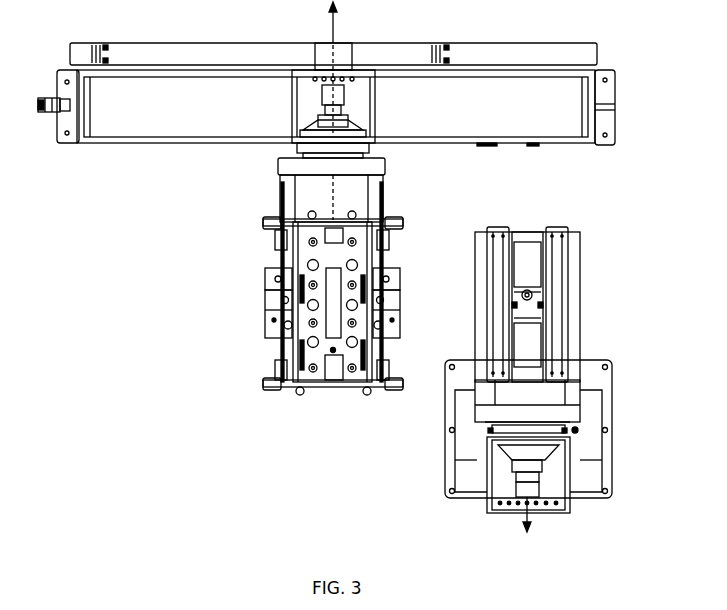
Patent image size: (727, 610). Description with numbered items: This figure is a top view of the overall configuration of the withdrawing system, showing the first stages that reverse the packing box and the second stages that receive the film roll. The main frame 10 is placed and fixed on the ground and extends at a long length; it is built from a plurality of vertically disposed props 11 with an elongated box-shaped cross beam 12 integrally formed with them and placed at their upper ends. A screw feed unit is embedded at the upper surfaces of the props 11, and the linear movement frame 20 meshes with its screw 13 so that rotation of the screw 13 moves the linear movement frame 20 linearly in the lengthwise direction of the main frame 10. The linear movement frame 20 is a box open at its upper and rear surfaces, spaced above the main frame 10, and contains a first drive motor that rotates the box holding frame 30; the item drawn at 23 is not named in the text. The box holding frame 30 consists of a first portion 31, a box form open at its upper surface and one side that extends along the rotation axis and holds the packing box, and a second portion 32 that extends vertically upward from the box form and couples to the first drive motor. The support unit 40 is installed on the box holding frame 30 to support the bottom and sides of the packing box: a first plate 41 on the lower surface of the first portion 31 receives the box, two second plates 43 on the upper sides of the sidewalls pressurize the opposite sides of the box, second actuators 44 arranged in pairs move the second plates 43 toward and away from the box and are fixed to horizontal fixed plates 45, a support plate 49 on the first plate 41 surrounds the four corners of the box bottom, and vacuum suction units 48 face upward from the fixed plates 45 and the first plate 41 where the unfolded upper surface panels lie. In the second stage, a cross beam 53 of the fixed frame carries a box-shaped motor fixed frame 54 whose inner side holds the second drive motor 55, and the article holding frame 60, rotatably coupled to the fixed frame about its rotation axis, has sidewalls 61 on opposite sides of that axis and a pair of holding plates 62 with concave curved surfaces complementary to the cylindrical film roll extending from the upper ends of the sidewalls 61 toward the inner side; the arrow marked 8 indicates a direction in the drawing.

The direction arrow 8 is at (526, 523).
The main frame 10 is at (324, 108).
The props 11 is at (64, 150).
The cross beam 12 is at (120, 88).
The screw 13 is at (47, 122).
The linear movement frame 20 is at (318, 80).
The drive block 23 is at (333, 114).
The box holding frame 30 is at (313, 190).
The first portion 31 is at (356, 194).
The second portion 32 is at (340, 164).
The support unit 40 is at (287, 318).
The first plate 41 is at (326, 390).
The second plates 43 is at (310, 303).
The second actuators 44 is at (266, 270).
The fixed plates 45 is at (266, 292).
The vacuum suction units 48 is at (298, 215).
The support plate 49 is at (378, 236).
The cross beam 53 is at (468, 477).
The motor fixed frame 54 is at (465, 404).
The second drive motor 55 is at (505, 488).
The article holding frame 60 is at (517, 384).
The sidewalls 61 is at (500, 290).
The holding plates 62 is at (526, 262).